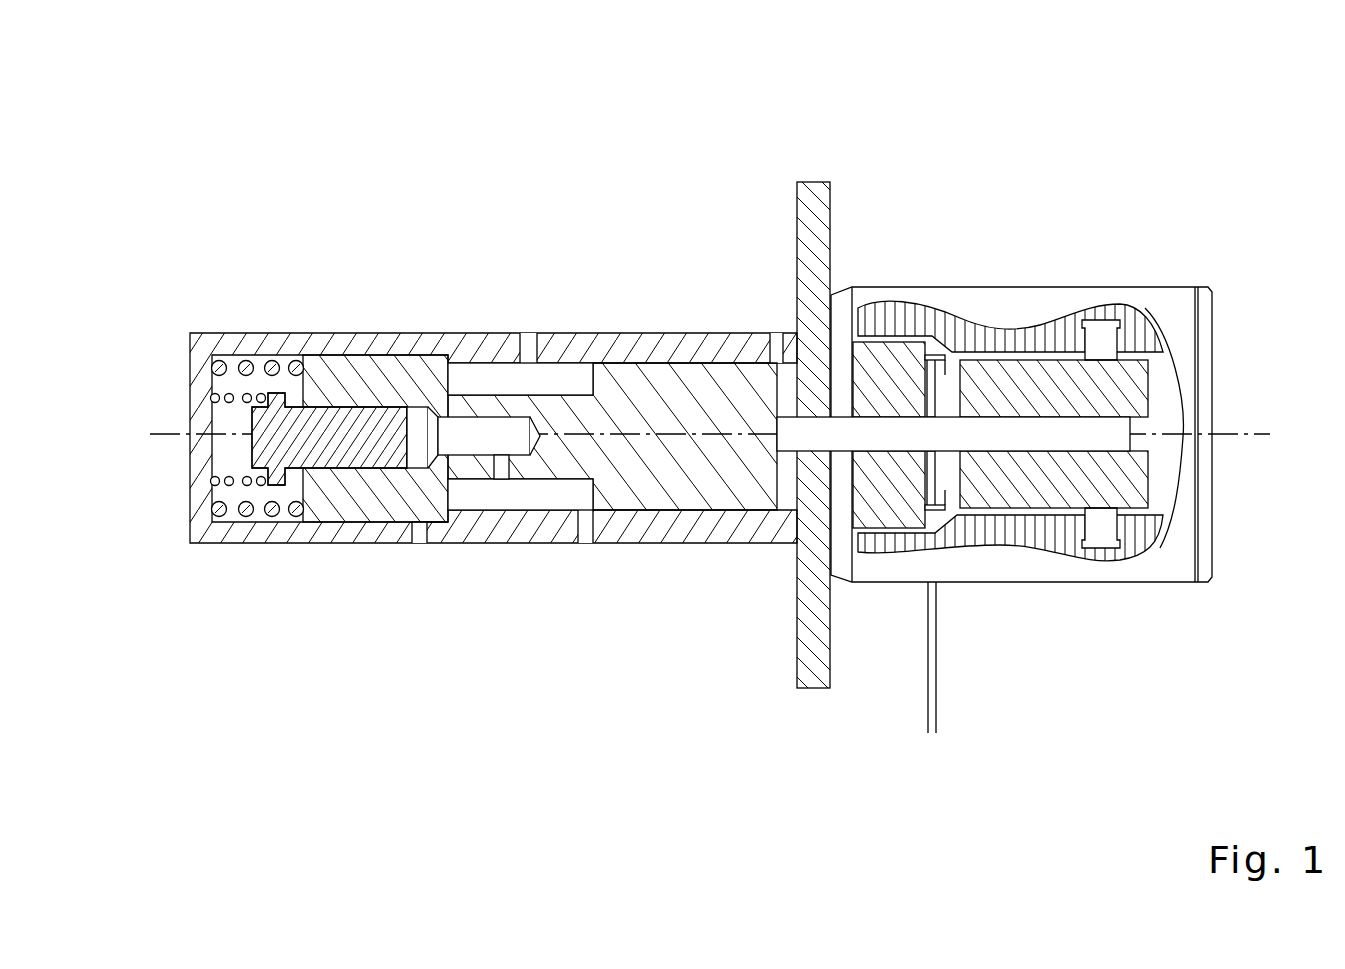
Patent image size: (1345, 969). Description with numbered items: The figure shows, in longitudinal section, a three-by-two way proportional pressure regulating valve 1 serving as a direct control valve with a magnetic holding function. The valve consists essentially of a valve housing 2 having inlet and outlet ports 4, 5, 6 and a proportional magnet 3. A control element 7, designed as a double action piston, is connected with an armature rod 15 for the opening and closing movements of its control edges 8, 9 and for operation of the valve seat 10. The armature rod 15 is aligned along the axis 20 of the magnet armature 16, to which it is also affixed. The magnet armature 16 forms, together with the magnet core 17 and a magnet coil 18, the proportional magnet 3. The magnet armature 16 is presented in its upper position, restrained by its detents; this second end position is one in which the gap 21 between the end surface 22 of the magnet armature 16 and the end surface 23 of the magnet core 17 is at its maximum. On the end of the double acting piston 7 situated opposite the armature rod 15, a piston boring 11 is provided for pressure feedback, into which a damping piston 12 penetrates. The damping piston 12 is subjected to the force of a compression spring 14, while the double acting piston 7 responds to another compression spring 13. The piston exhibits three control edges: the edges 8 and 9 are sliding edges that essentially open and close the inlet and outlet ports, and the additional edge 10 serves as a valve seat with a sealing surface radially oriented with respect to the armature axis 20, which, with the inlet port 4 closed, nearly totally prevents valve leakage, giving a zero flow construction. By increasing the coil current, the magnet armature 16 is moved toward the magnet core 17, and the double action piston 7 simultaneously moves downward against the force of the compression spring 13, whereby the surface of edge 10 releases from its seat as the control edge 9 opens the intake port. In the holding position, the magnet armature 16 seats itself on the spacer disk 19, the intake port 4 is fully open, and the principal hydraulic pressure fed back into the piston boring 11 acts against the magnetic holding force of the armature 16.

The pressure regulating valve 1 is at (780, 168).
The valve housing 2 is at (436, 287).
The proportional magnet 3 is at (1104, 248).
The inlet port 4 is at (420, 576).
The outlet port 5 is at (527, 283).
The outlet port 6 is at (585, 575).
The control element 7 is at (665, 415).
The control edge 8 is at (598, 502).
The control edge 9 is at (437, 525).
The valve seat 10 is at (440, 508).
The piston boring 11 is at (453, 438).
The damping piston 12 is at (328, 440).
The compression spring 13 is at (245, 510).
The compression spring 14 is at (229, 398).
The armature rod 15 is at (1070, 437).
The magnet armature 16 is at (1117, 387).
The magnet core 17 is at (882, 503).
The magnet coil 18 is at (1155, 533).
The spacer disk 19 is at (930, 360).
The axis 20 is at (1235, 434).
The gap 21 is at (970, 725).
The end surface 22 is at (952, 373).
The end surface 23 is at (940, 507).